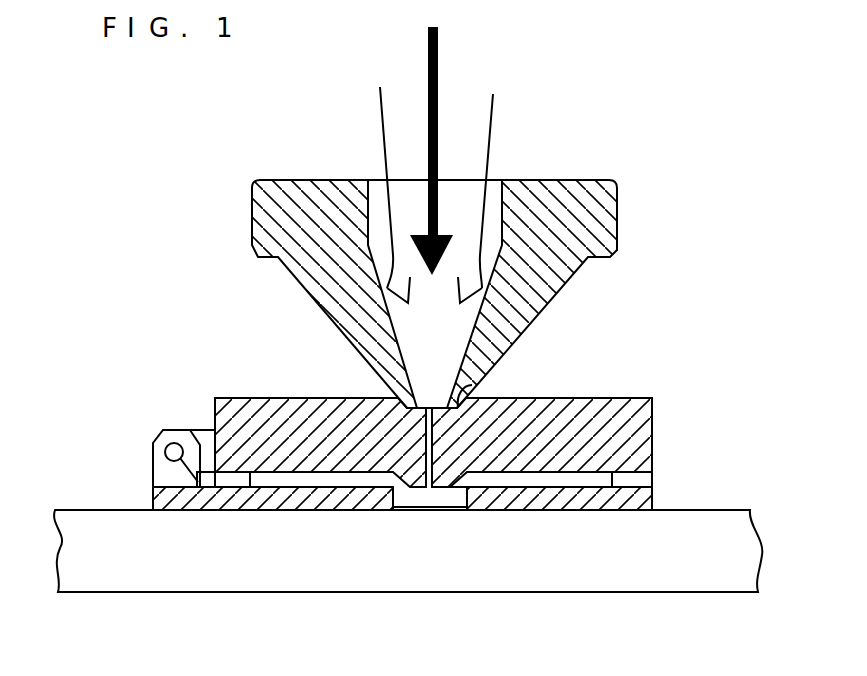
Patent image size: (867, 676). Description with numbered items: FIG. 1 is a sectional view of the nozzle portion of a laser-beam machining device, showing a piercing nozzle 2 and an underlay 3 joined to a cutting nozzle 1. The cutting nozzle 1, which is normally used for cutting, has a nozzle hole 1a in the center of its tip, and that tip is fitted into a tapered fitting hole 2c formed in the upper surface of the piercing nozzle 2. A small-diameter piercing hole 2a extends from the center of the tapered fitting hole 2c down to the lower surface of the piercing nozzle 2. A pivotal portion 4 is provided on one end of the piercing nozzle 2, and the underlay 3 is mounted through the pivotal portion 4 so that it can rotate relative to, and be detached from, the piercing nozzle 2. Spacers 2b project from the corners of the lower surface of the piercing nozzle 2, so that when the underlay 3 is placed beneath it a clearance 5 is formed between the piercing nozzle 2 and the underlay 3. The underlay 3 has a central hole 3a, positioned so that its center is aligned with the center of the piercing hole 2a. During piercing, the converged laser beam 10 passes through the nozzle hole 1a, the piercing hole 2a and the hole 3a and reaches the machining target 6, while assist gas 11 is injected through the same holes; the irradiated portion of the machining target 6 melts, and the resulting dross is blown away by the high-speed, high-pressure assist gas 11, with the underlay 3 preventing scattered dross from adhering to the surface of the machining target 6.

The cutting nozzle 1 is at (580, 207).
The nozzle hole 1a is at (429, 420).
The piercing nozzle 2 is at (628, 418).
The piercing hole 2a is at (427, 458).
The spacer 2b is at (235, 482).
The tapered fitting hole 2c is at (462, 388).
The underlay 3 is at (623, 498).
The hole 3a is at (426, 500).
The pivotal portion 4 is at (176, 452).
The clearance 5 is at (540, 482).
The machining target 6 is at (98, 525).
The laser beam 10 is at (437, 98).
The assist gas 11 is at (492, 157).